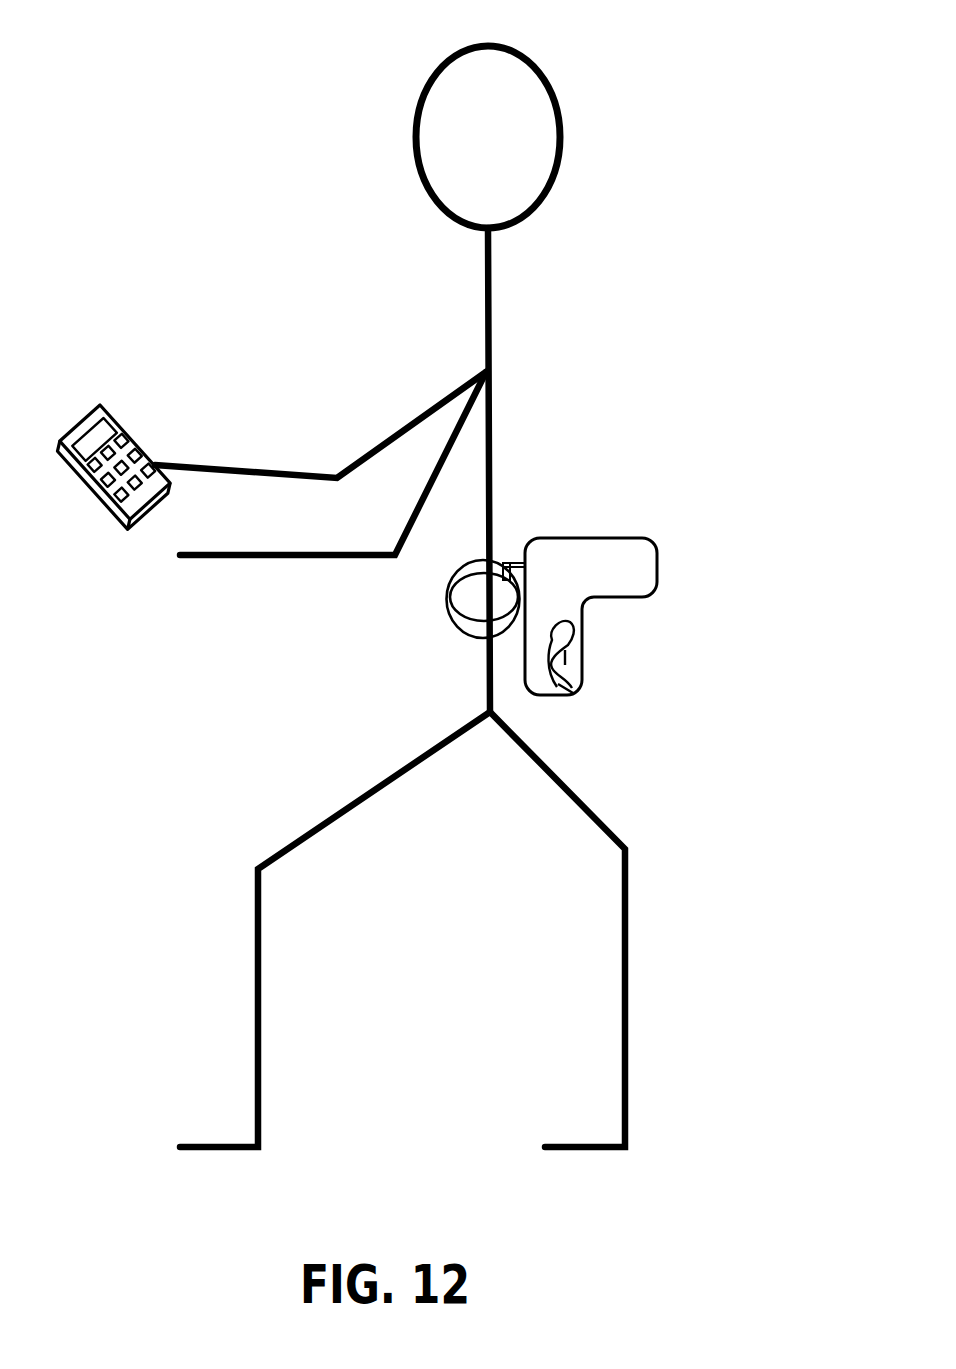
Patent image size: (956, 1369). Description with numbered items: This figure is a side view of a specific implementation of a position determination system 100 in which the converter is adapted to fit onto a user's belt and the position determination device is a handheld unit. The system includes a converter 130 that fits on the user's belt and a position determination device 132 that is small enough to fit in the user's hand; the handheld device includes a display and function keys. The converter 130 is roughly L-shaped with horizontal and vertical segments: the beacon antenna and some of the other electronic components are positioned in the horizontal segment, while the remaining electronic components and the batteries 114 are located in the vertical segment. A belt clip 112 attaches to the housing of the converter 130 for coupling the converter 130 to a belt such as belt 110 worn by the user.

The position determination system 100 is at (620, 48).
The belt 110 is at (476, 640).
The belt clip 112 is at (507, 562).
The batteries 114 is at (575, 647).
The converter 130 is at (638, 616).
The position determination device 132 is at (165, 441).